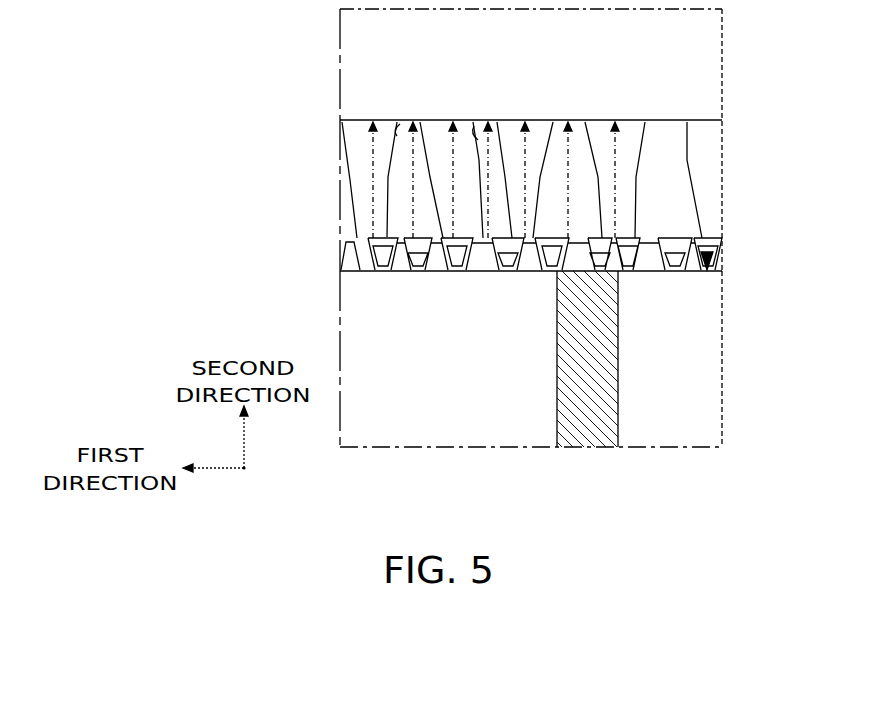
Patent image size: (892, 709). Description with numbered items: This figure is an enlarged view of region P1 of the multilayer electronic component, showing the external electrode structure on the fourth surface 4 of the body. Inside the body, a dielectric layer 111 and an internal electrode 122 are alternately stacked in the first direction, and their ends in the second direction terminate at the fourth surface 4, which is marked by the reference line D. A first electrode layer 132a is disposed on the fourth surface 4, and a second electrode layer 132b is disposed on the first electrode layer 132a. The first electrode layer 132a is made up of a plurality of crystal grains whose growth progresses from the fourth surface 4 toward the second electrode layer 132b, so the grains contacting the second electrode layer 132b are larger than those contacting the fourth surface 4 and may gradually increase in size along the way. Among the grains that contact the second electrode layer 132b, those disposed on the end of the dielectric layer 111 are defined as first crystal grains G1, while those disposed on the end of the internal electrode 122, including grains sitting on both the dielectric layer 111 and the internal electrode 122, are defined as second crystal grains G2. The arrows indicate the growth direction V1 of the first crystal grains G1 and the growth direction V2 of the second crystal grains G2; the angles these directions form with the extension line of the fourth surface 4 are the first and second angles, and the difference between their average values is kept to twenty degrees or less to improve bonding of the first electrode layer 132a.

The second electrode layer 132b is at (330, 9).
The first electrode layer 132a is at (330, 120).
The dielectric layer 111 is at (358, 331).
The internal electrode 122 is at (608, 372).
The fourth surface 4 is at (712, 236).
The reference level line D is at (722, 271).
The region P1 is at (555, 492).
The first crystal grain G1 is at (510, 117).
The second crystal grain G2 is at (597, 117).
The growth direction of the first crystal grain V1 is at (448, 171).
The growth direction of the second crystal grain V2 is at (591, 171).